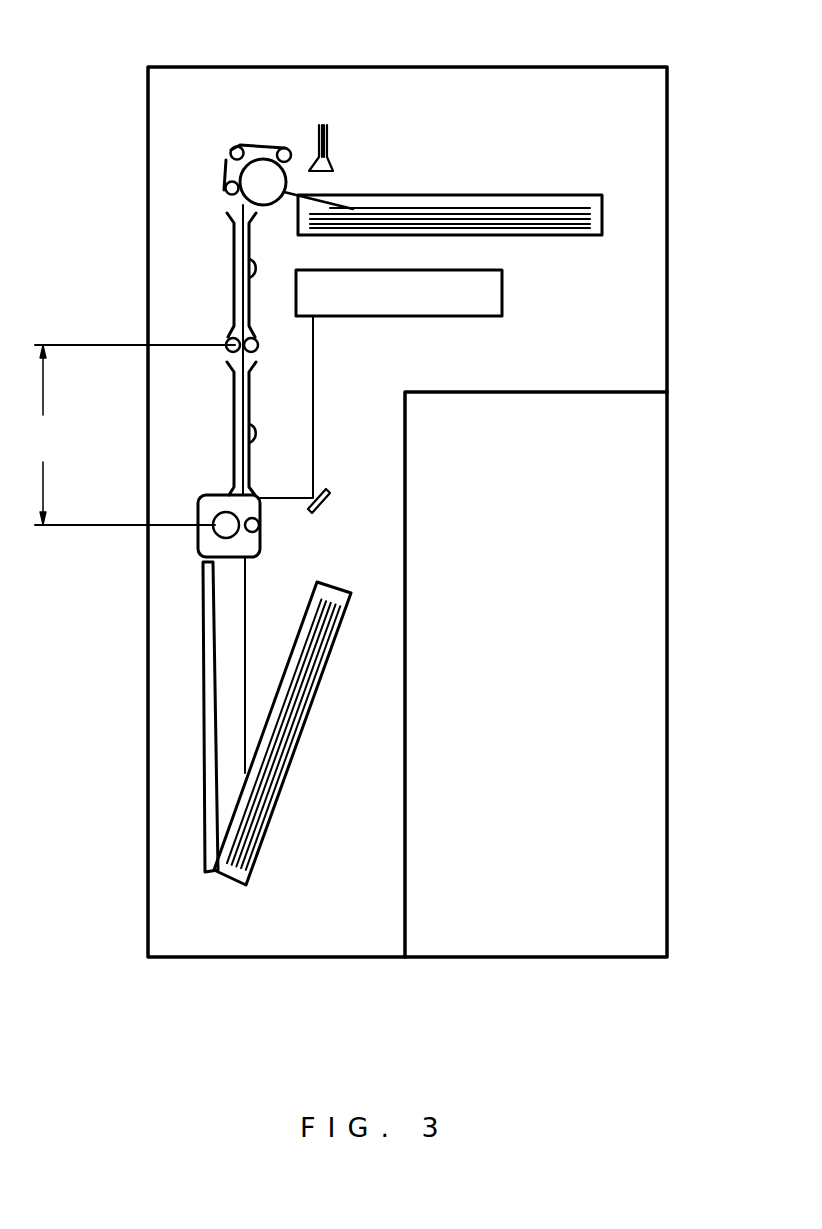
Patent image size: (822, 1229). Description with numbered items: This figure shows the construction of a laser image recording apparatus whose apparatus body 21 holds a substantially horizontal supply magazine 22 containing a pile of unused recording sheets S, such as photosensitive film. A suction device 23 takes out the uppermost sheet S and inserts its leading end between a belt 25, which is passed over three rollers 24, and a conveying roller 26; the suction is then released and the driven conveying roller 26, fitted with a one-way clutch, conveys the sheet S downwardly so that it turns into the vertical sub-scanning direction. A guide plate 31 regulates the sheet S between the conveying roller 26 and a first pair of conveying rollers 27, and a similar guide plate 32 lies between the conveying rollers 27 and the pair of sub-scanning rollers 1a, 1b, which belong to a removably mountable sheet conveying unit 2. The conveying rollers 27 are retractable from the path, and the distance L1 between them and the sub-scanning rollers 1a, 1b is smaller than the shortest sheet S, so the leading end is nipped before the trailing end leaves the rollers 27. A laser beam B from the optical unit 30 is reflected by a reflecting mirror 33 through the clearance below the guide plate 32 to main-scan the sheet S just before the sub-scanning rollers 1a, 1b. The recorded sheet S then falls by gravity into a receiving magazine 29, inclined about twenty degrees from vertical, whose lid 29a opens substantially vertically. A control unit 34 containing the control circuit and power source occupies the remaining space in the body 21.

The apparatus body 21 is at (605, 78).
The supply magazine 22 is at (510, 195).
The suction device 23 is at (323, 140).
The rollers 24 is at (283, 148).
The belt 25 is at (237, 147).
The conveying roller 26 is at (247, 207).
The first pair of conveying rollers 27 is at (226, 343).
The receiving magazine 29 is at (230, 886).
The lid 29a is at (202, 673).
The optical unit 30 is at (502, 296).
The guide plate 31 is at (240, 253).
The guide plate 32 is at (234, 443).
The reflecting mirror 33 is at (327, 505).
The control unit 34 is at (640, 392).
The sheet conveying unit 2 is at (215, 493).
The sub-scanning roller 1a is at (212, 538).
The sub-scanning roller 1b is at (258, 530).
The laser beam B is at (316, 427).
The recording sheet S is at (330, 208).
The distance L1 is at (130, 435).